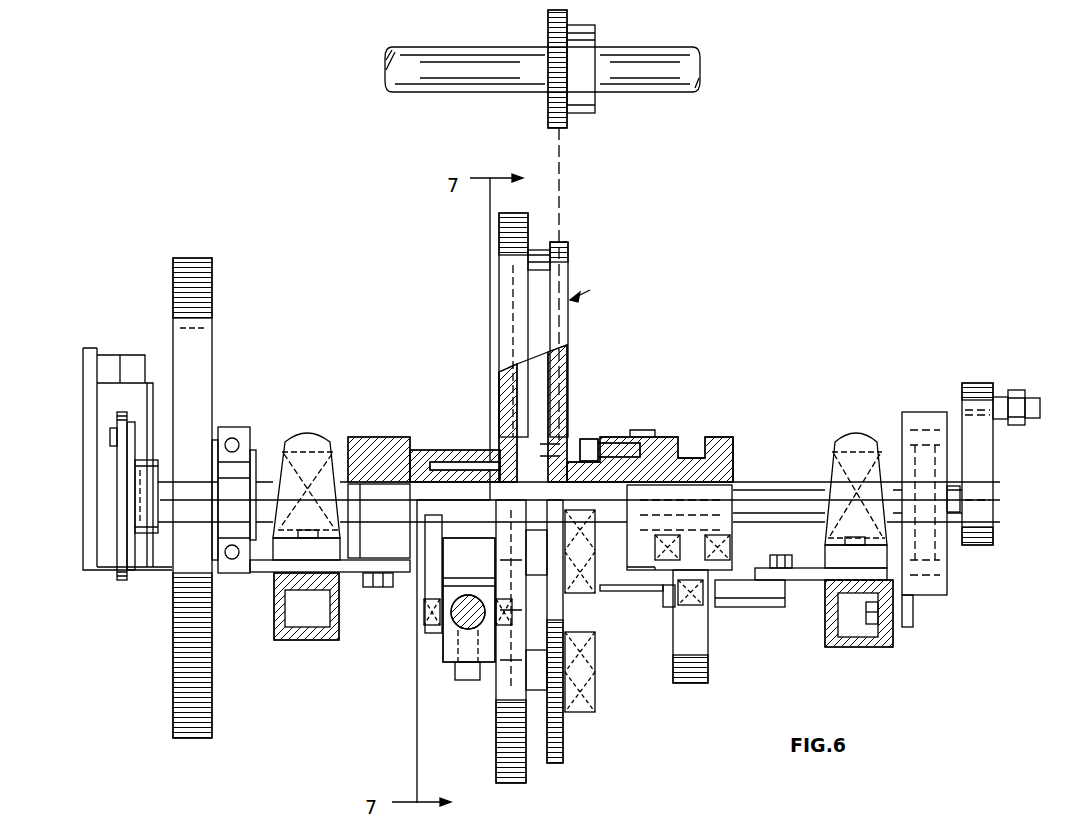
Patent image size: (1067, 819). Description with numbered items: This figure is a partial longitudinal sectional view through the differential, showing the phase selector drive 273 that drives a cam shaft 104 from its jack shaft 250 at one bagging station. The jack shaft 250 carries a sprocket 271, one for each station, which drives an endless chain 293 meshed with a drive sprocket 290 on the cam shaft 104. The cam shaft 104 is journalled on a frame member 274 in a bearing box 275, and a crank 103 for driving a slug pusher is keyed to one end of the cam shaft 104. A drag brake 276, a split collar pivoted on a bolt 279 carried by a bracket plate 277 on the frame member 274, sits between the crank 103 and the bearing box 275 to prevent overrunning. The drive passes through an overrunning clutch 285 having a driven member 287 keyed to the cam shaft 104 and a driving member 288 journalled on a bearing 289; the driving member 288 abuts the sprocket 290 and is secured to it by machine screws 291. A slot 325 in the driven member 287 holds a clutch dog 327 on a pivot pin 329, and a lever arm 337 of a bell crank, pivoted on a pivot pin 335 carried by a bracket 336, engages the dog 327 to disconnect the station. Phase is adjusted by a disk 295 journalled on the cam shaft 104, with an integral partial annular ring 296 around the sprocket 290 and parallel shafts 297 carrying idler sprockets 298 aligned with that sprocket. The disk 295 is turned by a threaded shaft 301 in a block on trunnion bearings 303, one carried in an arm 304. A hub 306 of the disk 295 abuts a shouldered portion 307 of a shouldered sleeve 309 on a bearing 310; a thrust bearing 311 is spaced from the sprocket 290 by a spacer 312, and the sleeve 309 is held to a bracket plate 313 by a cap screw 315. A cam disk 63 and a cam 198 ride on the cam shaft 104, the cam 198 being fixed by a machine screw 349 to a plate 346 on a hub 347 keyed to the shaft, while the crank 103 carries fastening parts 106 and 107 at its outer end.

The jack shaft 250 is at (655, 48).
The sprocket 271 is at (548, 112).
The endless chain 293 is at (562, 147).
The partial annular ring 296 is at (570, 252).
The disk 295 is at (506, 262).
The phase selector drive 273 is at (601, 290).
The drive sprocket 290 is at (552, 350).
The thrust bearing 311 is at (530, 448).
The spacer 312 is at (540, 453).
The shouldered sleeve 309 is at (490, 455).
The shouldered portion 307 is at (420, 463).
The bearing 310 is at (398, 460).
The hub 306 is at (447, 450).
The machine screw 291 is at (585, 450).
The driving member 288 is at (640, 437).
The bearing 289 is at (703, 440).
The slot 325 is at (725, 440).
The driven member 287 is at (735, 446).
The cam shaft 104 is at (808, 480).
The bolt 279 is at (953, 493).
The nut 106 is at (1012, 388).
The bolt 107 is at (1030, 396).
The crank 103 is at (988, 452).
The bearing box 275 is at (308, 436).
The pivot pin 329 is at (725, 522).
The cam disk 63 is at (212, 312).
The machine screw 349 is at (112, 437).
The cam 198 is at (120, 582).
The plate 346 is at (131, 582).
The hub 347 is at (150, 540).
The frame member 274 is at (305, 642).
The bracket plate 313 is at (357, 574).
The cap screw 315 is at (385, 590).
The trunnion bearing 303 is at (428, 612).
The arm 304 is at (430, 648).
The threaded shaft 301 is at (465, 625).
The parallel shaft 297 is at (548, 730).
The idler sprocket 298 is at (563, 600).
The clutch dog 327 is at (690, 550).
The pivot pin 335 is at (805, 552).
The bracket 336 is at (662, 595).
The overrunning clutch 285 is at (655, 600).
The lever arm 337 is at (708, 662).
The drag brake 276 is at (945, 585).
The bracket plate 277 is at (890, 632).